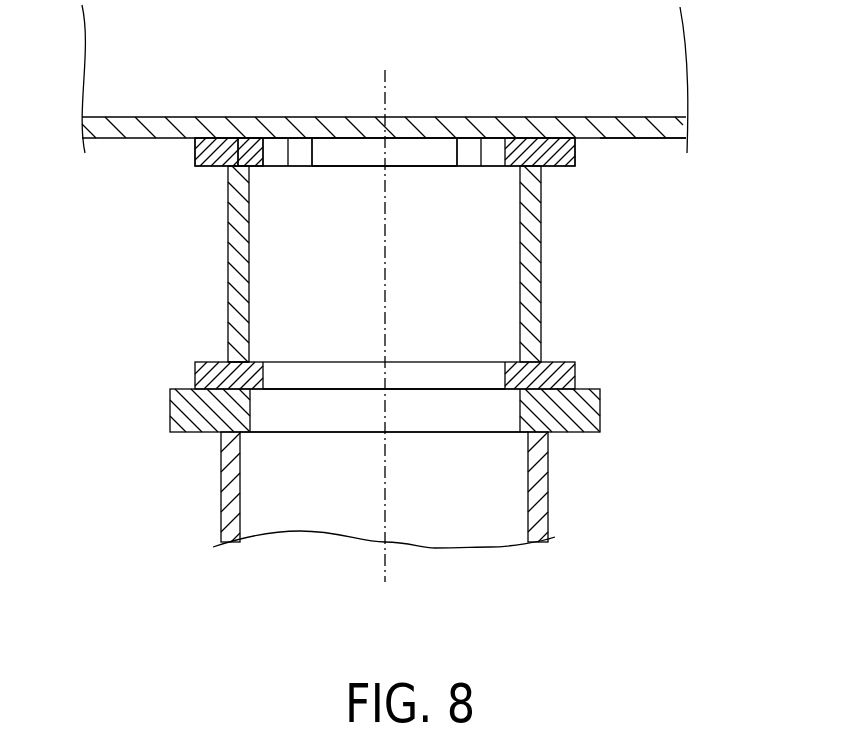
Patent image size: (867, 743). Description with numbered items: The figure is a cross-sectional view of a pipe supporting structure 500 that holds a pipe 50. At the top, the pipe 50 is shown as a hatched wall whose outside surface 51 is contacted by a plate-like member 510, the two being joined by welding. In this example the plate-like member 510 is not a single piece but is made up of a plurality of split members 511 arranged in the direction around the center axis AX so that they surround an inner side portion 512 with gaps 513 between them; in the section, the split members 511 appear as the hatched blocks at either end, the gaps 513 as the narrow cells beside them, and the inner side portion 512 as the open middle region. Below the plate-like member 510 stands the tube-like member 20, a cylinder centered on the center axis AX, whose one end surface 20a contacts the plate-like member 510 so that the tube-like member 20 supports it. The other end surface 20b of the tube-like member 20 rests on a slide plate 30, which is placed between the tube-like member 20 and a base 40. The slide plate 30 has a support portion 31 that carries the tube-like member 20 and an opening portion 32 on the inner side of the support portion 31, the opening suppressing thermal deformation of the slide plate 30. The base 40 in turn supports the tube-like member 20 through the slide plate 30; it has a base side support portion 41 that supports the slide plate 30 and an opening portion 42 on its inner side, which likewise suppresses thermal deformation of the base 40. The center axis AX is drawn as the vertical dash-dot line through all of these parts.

The tube-like member 20 is at (237, 235).
The one end surface 20a is at (252, 140).
The other end surface 20b is at (229, 363).
The slide plate 30 is at (195, 377).
The support portion 31 is at (565, 378).
The opening portion 32 is at (485, 378).
The base 40 is at (170, 412).
The base side support portion 41 is at (588, 408).
The opening portion 42 is at (427, 412).
The pipe 50 is at (603, 112).
The outside surface 51 is at (652, 138).
The pipe supporting structure 500 is at (622, 217).
The plate-like member 510 is at (195, 152).
The split members 511 is at (273, 148).
The inner side portion 512 is at (395, 150).
The gaps 513 is at (303, 148).
The center axis AX is at (385, 310).